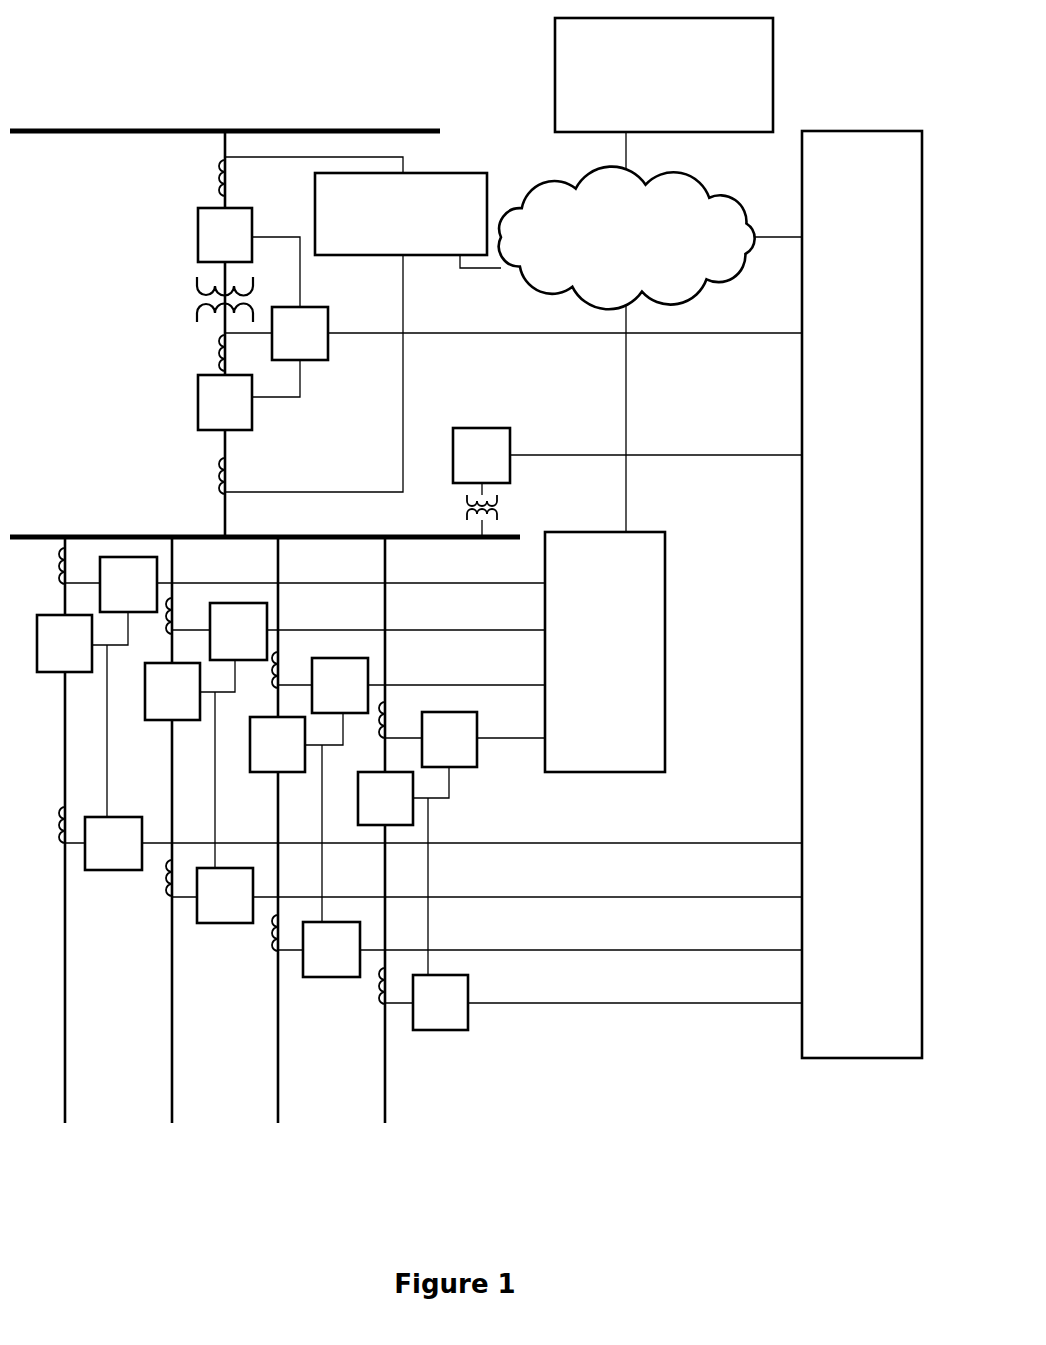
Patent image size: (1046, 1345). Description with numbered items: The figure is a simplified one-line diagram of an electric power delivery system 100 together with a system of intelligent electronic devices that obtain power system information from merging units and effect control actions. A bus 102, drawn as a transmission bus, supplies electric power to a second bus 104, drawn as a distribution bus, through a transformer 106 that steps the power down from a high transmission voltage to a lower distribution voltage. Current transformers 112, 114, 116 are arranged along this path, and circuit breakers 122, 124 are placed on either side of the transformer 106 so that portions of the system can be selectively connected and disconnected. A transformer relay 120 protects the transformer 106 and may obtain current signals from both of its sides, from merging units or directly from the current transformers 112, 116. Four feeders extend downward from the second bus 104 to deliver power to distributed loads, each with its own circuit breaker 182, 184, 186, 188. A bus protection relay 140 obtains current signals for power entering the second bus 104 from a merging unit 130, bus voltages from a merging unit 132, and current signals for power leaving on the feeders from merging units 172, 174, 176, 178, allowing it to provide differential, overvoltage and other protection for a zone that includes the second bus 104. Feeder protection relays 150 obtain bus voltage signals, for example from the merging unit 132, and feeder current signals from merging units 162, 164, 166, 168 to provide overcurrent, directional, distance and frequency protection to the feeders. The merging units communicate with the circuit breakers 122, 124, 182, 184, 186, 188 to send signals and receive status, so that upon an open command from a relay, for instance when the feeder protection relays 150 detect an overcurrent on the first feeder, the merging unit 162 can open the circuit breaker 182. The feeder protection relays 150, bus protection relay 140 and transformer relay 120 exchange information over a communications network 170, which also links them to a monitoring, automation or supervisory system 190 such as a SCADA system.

The electric power delivery system 100 is at (88, 80).
The bus 102 is at (81, 134).
The second bus 104 is at (40, 534).
The transformer 106 is at (195, 288).
The current transformer 112 is at (217, 185).
The current transformer 114 is at (217, 363).
The current transformer 116 is at (217, 466).
The transformer relay 120 is at (466, 172).
The circuit breaker 122 is at (196, 232).
The circuit breaker 124 is at (196, 404).
The merging unit 130 is at (330, 326).
The merging unit 132 is at (512, 476).
The bus protection relay 140 is at (846, 1061).
The feeder protection relays 150 is at (616, 775).
The merging unit 162 is at (165, 574).
The merging unit 164 is at (270, 624).
The merging unit 166 is at (372, 678).
The merging unit 168 is at (480, 727).
The network 170 is at (726, 201).
The merging unit 172 is at (116, 874).
The merging unit 174 is at (228, 926).
The merging unit 176 is at (338, 980).
The merging unit 178 is at (450, 1033).
The circuit breaker 182 is at (46, 675).
The circuit breaker 184 is at (153, 723).
The circuit breaker 186 is at (263, 775).
The circuit breaker 188 is at (414, 816).
The supervisory system 190 is at (776, 30).